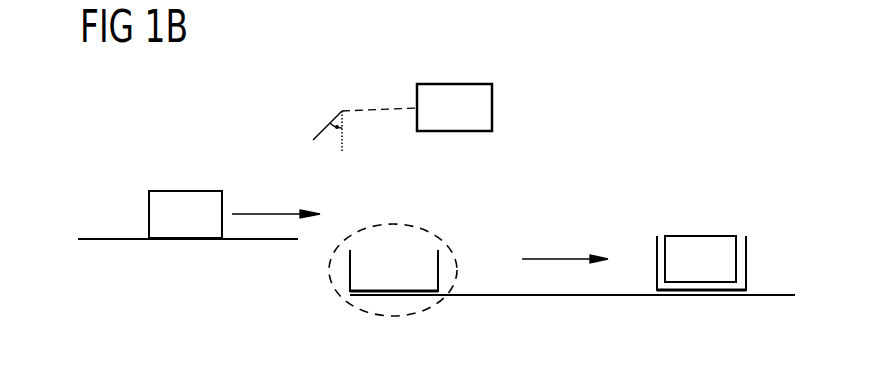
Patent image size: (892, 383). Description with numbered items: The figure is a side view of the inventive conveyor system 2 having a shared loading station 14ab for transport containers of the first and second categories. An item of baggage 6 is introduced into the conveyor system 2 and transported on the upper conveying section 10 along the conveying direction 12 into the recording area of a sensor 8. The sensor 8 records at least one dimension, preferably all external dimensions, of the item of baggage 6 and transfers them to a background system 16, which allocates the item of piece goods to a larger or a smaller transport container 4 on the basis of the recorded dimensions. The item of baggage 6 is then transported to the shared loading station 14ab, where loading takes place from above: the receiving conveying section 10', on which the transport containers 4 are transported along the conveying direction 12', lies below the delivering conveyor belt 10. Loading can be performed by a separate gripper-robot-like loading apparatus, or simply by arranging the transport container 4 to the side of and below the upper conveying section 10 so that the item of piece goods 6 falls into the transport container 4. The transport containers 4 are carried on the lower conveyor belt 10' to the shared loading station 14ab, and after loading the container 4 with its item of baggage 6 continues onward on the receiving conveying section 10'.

The conveyor system 2 is at (122, 118).
The transport container 4 is at (438, 262).
The item of baggage 6 is at (186, 191).
The sensor 8 is at (342, 111).
The conveying section 10 is at (188, 274).
The receiving conveying section 10' is at (572, 329).
The conveying direction 12 is at (276, 184).
The conveying direction of receiving conveying section 12' is at (565, 228).
The shared loading station 14ab is at (360, 308).
The background system 16 is at (492, 105).